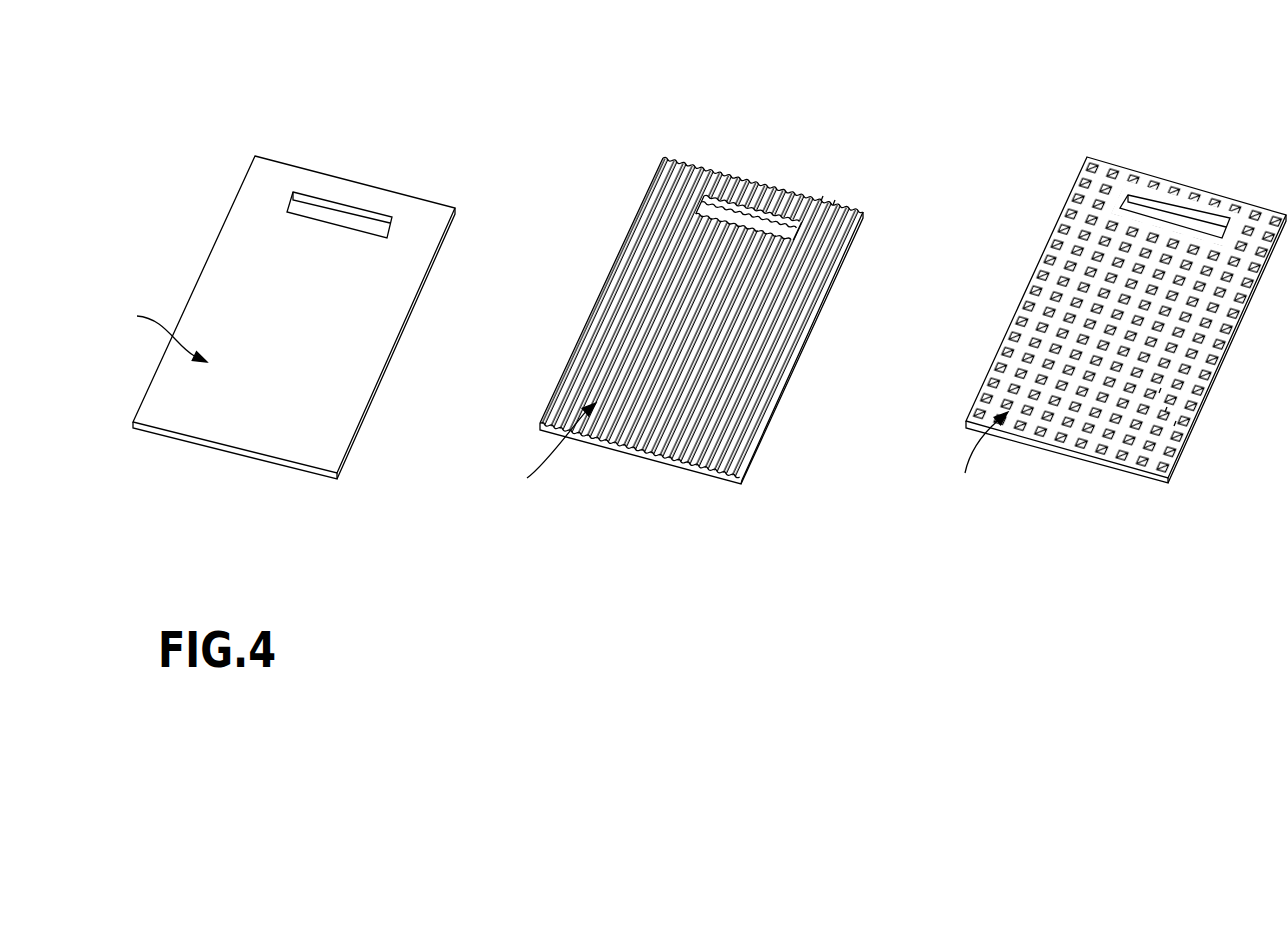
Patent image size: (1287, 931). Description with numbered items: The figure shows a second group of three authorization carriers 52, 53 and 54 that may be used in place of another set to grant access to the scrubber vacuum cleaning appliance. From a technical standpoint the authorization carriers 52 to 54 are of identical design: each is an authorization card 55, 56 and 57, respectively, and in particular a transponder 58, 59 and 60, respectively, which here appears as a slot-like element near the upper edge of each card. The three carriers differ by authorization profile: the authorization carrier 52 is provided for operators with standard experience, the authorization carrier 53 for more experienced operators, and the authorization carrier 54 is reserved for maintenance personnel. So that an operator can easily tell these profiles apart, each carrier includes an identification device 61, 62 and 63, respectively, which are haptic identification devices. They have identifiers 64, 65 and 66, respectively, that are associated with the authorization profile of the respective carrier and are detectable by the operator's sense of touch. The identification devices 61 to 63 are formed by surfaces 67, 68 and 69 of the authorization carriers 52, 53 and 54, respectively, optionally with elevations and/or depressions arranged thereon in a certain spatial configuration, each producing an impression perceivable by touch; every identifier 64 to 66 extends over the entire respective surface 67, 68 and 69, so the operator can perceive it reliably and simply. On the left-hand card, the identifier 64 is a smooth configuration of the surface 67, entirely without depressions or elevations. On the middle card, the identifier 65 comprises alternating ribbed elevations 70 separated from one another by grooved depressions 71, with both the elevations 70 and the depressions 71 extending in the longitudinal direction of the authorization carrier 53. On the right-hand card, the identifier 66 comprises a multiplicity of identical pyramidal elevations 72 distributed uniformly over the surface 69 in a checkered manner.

The authorization carrier 52 is at (281, 277).
The authorization carrier 53 is at (707, 285).
The authorization carrier 54 is at (1119, 286).
The authorization card 55 is at (259, 177).
The authorization card 56 is at (702, 282).
The authorization card 57 is at (1126, 286).
The transponder 58 is at (274, 184).
The transponder 59 is at (702, 184).
The transponder 60 is at (1118, 184).
The identification device 61 is at (157, 333).
The identification device 62 is at (555, 455).
The identification device 63 is at (980, 458).
The identifier 64 is at (212, 407).
The identifier 65 is at (627, 419).
The identifier 66 is at (1057, 413).
The surface 67 is at (337, 422).
The surface 68 is at (752, 392).
The surface 69 is at (1126, 318).
The ribbed elevations 70 is at (667, 184).
The grooved depressions 71 is at (835, 200).
The pyramidal elevations 72 is at (1176, 421).